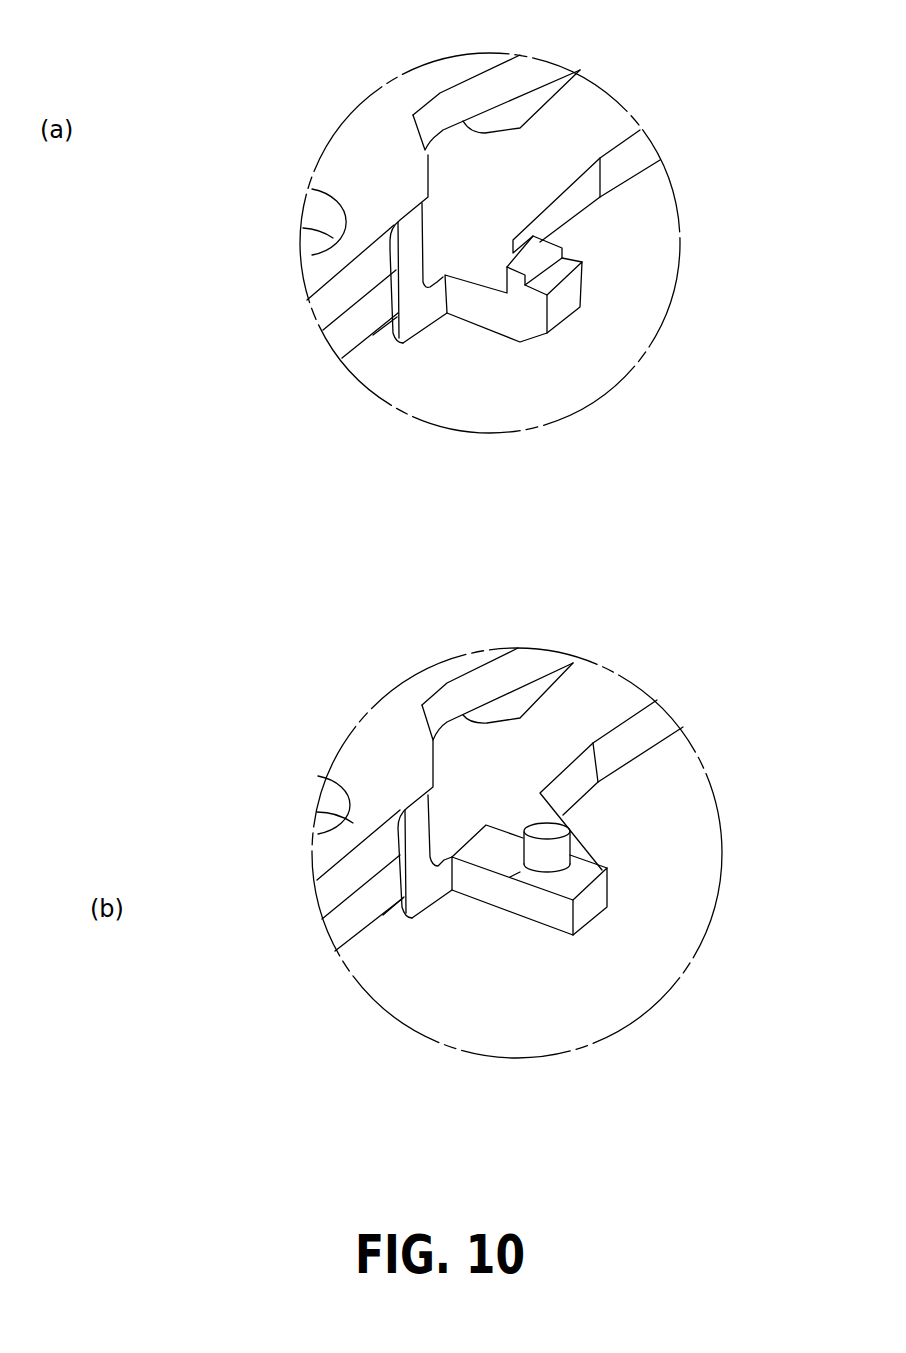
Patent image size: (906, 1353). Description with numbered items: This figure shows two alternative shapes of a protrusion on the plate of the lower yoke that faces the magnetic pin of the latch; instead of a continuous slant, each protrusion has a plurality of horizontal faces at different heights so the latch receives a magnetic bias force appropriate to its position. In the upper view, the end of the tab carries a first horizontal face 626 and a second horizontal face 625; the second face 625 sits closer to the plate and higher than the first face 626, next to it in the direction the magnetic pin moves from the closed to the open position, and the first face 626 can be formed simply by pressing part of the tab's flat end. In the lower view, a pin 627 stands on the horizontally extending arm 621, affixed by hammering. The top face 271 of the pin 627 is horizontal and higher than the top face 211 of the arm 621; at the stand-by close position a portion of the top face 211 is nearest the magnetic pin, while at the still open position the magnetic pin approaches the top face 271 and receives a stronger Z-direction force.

The second horizontal face 625 is at (540, 251).
The first horizontal face 626 is at (558, 272).
The arm 621 is at (547, 905).
The pin 627 is at (530, 858).
The top face of the pin 271 is at (566, 826).
The top face of the arm 211 is at (590, 868).